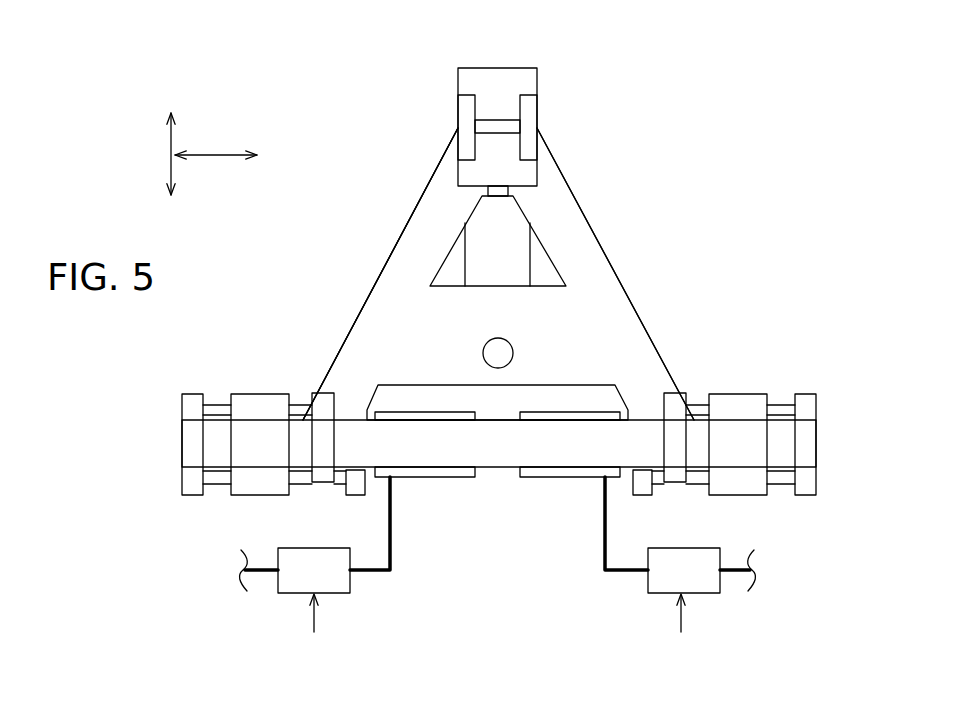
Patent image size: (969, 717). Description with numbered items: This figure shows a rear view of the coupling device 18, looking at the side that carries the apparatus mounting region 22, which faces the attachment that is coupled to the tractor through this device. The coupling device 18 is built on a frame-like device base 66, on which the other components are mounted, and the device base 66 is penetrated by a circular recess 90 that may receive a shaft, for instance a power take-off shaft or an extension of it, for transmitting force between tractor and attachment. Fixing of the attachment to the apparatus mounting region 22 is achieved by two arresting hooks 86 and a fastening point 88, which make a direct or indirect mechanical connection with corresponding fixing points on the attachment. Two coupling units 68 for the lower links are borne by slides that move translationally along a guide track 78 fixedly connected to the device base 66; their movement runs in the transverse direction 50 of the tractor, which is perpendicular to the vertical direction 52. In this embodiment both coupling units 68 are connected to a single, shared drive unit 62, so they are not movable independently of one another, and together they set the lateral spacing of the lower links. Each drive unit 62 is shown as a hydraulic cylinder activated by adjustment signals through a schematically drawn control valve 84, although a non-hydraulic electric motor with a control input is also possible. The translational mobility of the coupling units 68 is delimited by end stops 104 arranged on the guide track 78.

The coupling device 18 is at (687, 170).
The apparatus mounting region 22 is at (575, 243).
The transverse direction 50 is at (228, 152).
The vertical direction 52 is at (172, 167).
The drive unit 62 is at (515, 216).
The device base 66 is at (577, 320).
The coupling unit 68 is at (259, 392).
The guide track 78 is at (220, 410).
The control valve 84 is at (303, 546).
The arresting hook 86 is at (330, 391).
The fastening point 88 is at (500, 118).
The circular recess 90 is at (496, 372).
The end stop 104 is at (196, 485).